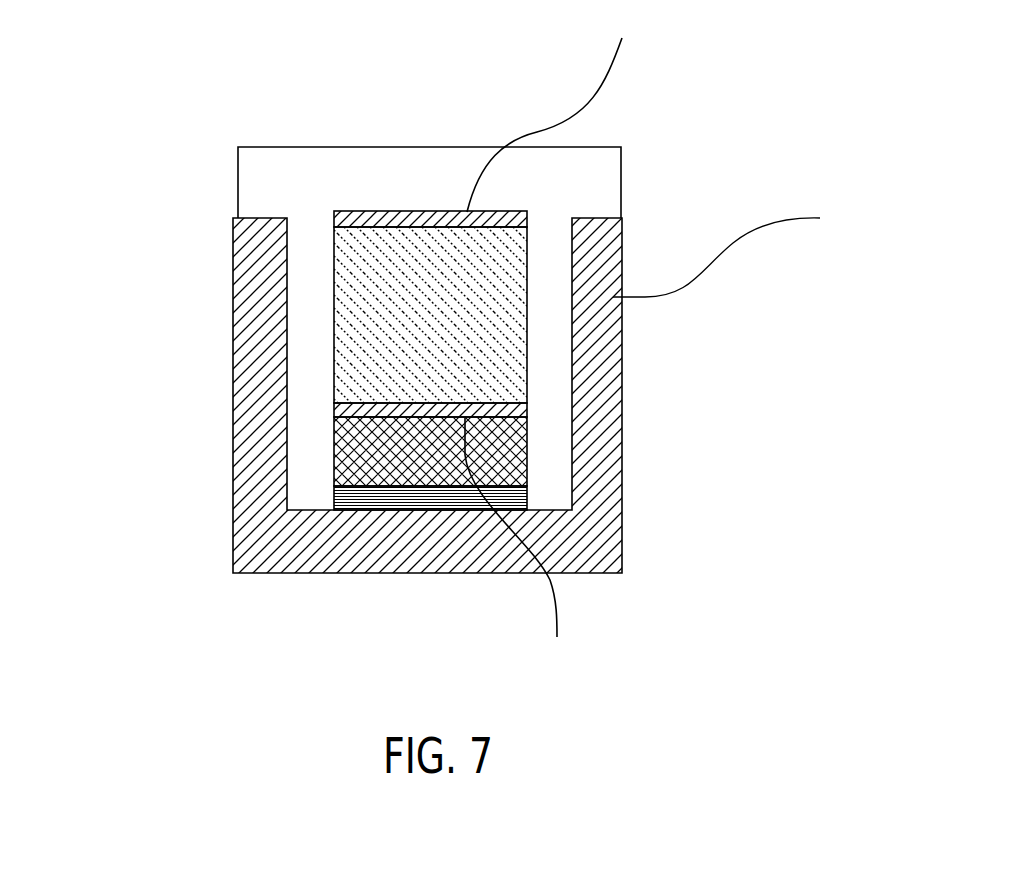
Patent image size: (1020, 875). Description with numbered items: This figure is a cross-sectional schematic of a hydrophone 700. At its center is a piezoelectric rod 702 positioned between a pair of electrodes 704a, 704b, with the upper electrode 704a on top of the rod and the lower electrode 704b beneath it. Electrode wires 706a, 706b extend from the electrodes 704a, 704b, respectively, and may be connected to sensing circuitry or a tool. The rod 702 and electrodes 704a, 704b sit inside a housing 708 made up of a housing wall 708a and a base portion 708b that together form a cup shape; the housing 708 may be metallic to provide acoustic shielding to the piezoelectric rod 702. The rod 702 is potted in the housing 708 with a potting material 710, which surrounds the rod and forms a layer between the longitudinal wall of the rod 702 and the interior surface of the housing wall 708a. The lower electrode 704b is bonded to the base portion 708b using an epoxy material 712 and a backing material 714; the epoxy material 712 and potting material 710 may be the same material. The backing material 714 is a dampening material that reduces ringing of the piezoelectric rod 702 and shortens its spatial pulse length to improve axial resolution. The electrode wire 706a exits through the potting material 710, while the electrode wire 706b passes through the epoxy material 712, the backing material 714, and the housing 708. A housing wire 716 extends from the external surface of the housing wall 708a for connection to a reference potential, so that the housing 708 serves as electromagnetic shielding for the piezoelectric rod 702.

The hydrophone 700 is at (116, 79).
The piezoelectric rod 702 is at (508, 347).
The electrode 704a is at (392, 212).
The electrode 704b is at (350, 382).
The electrode wire 706a is at (600, 98).
The electrode wire 706b is at (550, 620).
The housing 708 is at (393, 422).
The housing wall 708a is at (248, 377).
The base portion 708b is at (384, 560).
The potting material 710 is at (241, 150).
The epoxy material 712 is at (393, 497).
The backing material 714 is at (353, 463).
The housing wire 716 is at (755, 232).